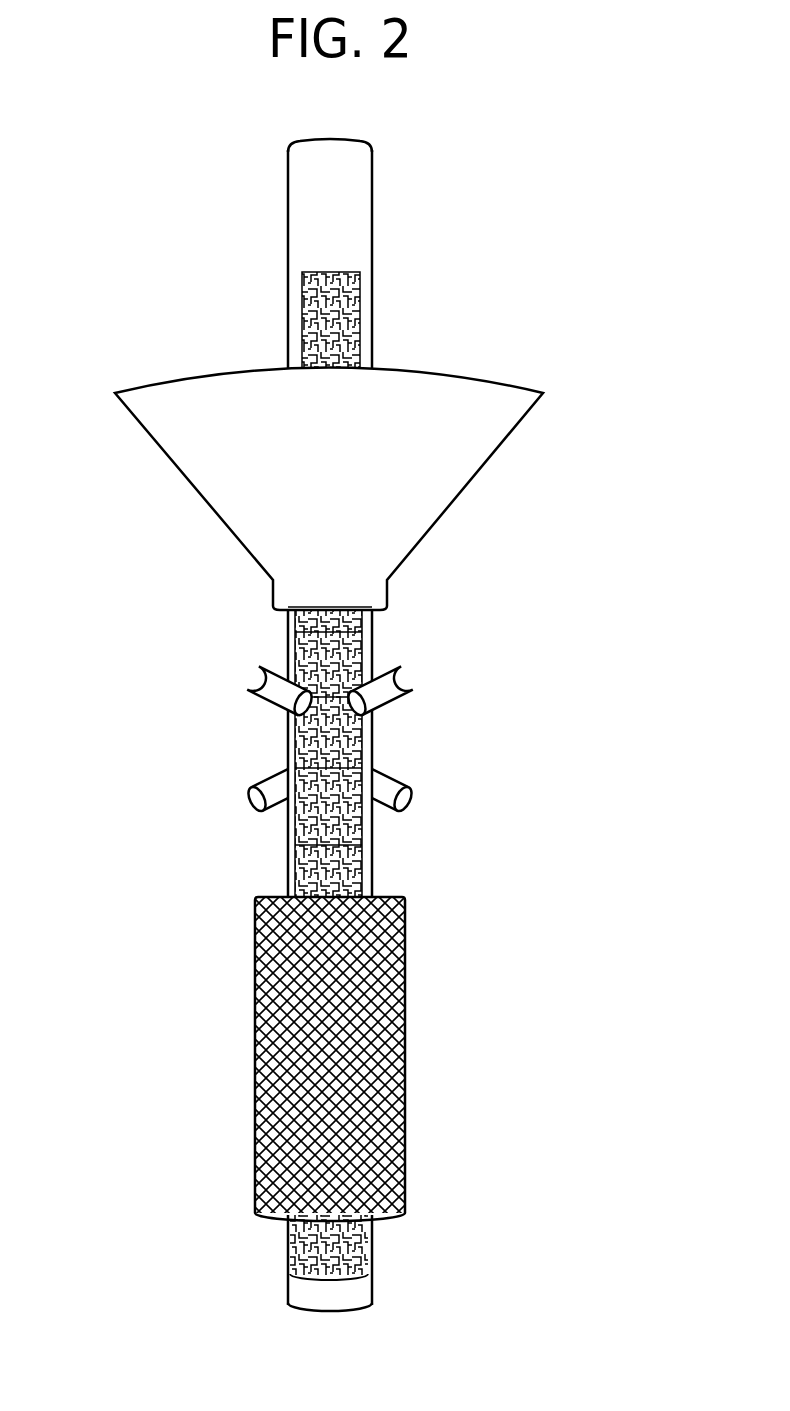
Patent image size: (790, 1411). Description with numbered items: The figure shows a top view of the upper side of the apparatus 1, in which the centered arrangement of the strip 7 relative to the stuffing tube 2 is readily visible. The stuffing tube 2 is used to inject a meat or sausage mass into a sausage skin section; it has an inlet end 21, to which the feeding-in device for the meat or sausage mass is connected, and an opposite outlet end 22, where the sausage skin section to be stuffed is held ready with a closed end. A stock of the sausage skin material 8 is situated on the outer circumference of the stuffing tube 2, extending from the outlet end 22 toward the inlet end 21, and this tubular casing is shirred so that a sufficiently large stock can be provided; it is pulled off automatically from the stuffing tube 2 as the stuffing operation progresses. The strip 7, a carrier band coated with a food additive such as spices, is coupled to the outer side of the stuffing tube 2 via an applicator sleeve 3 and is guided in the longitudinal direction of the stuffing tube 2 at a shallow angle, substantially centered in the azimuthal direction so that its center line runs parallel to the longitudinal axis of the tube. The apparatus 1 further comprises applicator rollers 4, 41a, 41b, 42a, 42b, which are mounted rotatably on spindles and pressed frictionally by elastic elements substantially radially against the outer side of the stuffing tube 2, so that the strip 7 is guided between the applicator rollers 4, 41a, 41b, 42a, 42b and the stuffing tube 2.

The apparatus 1 is at (114, 478).
The stuffing tube 2 is at (351, 208).
The inlet end 21 is at (352, 108).
The outlet end 22 is at (352, 1331).
The applicator sleeve 3 is at (517, 489).
The applicator roller 4 is at (339, 739).
The applicator roller 41a is at (395, 677).
The applicator roller 41b is at (253, 677).
The applicator roller 42a is at (388, 778).
The applicator roller 42b is at (262, 782).
The strip 7 is at (357, 842).
The sausage skin material 8 is at (395, 1037).